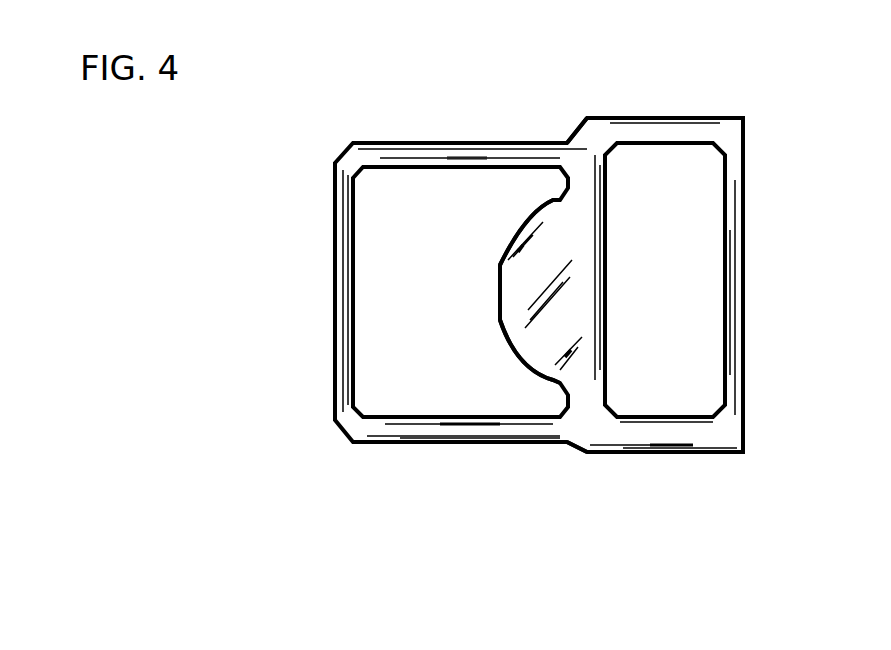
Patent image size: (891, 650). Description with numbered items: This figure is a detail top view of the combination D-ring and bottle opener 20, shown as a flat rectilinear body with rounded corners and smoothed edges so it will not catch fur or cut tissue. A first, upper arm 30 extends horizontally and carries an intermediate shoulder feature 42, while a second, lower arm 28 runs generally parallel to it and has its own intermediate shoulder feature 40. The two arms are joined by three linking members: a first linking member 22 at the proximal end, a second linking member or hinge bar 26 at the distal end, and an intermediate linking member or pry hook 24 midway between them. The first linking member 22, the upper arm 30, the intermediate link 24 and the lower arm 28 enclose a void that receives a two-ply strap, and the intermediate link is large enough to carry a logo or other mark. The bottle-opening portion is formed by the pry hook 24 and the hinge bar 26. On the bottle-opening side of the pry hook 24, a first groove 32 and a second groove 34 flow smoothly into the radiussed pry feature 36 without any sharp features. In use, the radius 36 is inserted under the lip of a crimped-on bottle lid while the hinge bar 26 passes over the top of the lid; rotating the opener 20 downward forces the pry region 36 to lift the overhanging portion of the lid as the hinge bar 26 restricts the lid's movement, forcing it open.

The combination D-ring and bottle opener 20 is at (210, 443).
The first linking member 22 is at (737, 212).
The intermediate linking member (pry hook) 24 is at (573, 290).
The second linking member (hinge bar) 26 is at (335, 292).
The second (lower) arm 28 is at (398, 442).
The first (upper) arm 30 is at (382, 152).
The first groove 32 is at (523, 396).
The second groove 34 is at (538, 183).
The radiussed pry feature 36 is at (465, 291).
The intermediate shoulder feature 40 is at (555, 466).
The intermediate shoulder feature 42 is at (548, 110).